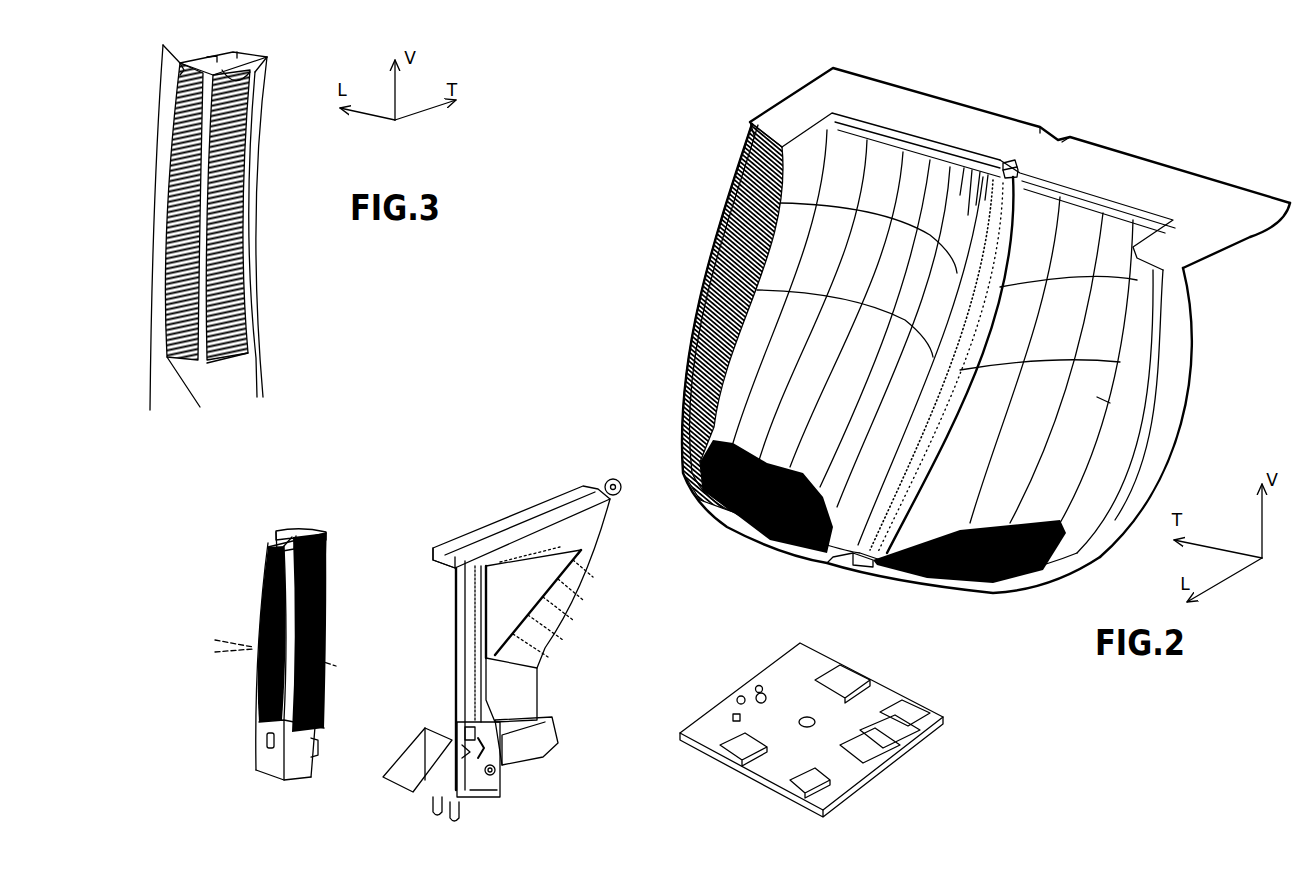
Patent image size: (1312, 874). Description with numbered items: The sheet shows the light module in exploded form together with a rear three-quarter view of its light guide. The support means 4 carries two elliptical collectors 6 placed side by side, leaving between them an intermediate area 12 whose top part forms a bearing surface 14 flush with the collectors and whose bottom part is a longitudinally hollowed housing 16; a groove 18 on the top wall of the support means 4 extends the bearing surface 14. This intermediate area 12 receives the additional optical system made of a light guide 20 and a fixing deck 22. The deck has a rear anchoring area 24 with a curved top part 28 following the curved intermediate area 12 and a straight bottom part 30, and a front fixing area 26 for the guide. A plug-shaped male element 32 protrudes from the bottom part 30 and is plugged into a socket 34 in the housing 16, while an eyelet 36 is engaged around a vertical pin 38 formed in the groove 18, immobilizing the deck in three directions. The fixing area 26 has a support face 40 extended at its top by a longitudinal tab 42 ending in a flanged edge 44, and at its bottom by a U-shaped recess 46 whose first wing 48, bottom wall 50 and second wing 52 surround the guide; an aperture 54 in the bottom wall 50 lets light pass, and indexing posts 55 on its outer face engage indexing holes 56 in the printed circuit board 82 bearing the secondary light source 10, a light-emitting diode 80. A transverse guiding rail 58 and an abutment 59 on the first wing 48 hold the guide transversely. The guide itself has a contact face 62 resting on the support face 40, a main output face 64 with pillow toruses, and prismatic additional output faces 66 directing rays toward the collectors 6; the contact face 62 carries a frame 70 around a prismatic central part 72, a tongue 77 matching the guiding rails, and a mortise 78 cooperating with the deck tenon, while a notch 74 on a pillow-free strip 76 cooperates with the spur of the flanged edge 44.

In FIG. 2, the support means 4 is at (986, 330).
In FIG. 2, the elliptical collector 6 is at (790, 337).
In FIG. 2, the secondary light source 10 is at (827, 705).
In FIG. 2, the intermediate area 12 is at (975, 150).
In FIG. 2, the bearing surface 14 is at (995, 235).
In FIG. 2, the housing 16 is at (835, 557).
In FIG. 2, the groove 18 is at (1060, 135).
In FIG. 3, the light guide 20 is at (238, 401).
In FIG. 3, the fixing deck 22 is at (507, 629).
In FIG. 3, the anchoring area 24 is at (588, 600).
In FIG. 3, the fixing area 26 is at (445, 580).
In FIG. 3, the top part 28 is at (592, 542).
In FIG. 3, the bottom part 30 is at (534, 690).
In FIG. 3, the male element 32 is at (553, 733).
In FIG. 2, the socket 34 is at (945, 407).
In FIG. 3, the eyelet 36 is at (611, 478).
In FIG. 2, the vertical pin 38 is at (1011, 160).
In FIG. 3, the support face 40 is at (470, 610).
In FIG. 3, the longitudinal tab 42 is at (522, 517).
In FIG. 3, the flanged edge 44 is at (435, 553).
In FIG. 3, the motor 46 is at (455, 738).
In FIG. 3, the first wing 48 is at (463, 727).
In FIG. 3, the bottom wall 50 is at (498, 796).
In FIG. 3, the second wing 52 is at (418, 758).
In FIG. 3, the aperture 54 is at (487, 792).
In FIG. 3, the indexing posts 55 is at (430, 808).
In FIG. 2, the sensor 56 is at (741, 696).
In FIG. 3, the transverse guiding rail 58 is at (497, 771).
In FIG. 3, the abutment 59 is at (470, 740).
In FIG. 3, the contact face 62 is at (228, 370).
In FIG. 3, the main output face 64 is at (258, 686).
In FIG. 3, the additional output face 66 is at (178, 173).
In FIG. 3, the frame 70 is at (256, 88).
In FIG. 3, the central part 72 is at (290, 224).
In FIG. 3, the notch 74 is at (218, 62).
In FIG. 3, the strip 76 is at (172, 73).
In FIG. 3, the tongue 77 is at (318, 745).
In FIG. 3, the mortise 78 is at (264, 740).
In FIG. 2, the light emitter 80 is at (763, 693).
In FIG. 2, the printed circuit board 82 is at (750, 783).